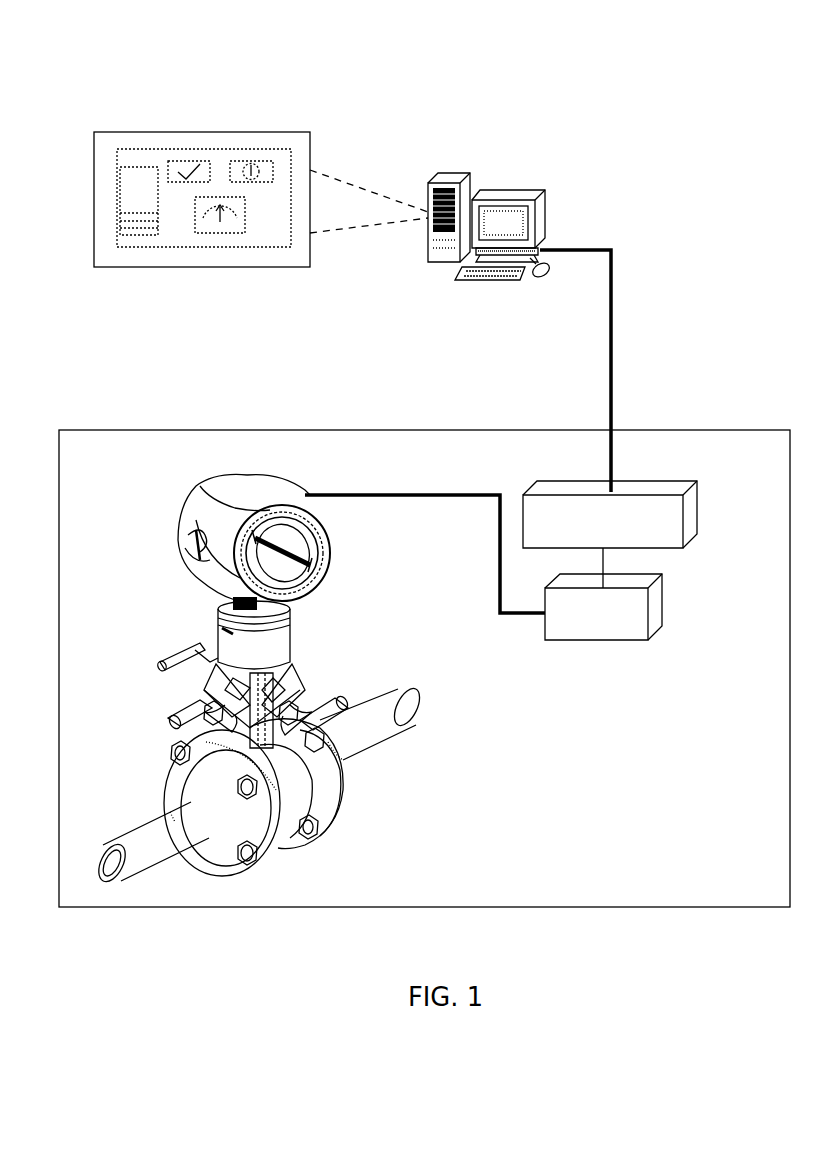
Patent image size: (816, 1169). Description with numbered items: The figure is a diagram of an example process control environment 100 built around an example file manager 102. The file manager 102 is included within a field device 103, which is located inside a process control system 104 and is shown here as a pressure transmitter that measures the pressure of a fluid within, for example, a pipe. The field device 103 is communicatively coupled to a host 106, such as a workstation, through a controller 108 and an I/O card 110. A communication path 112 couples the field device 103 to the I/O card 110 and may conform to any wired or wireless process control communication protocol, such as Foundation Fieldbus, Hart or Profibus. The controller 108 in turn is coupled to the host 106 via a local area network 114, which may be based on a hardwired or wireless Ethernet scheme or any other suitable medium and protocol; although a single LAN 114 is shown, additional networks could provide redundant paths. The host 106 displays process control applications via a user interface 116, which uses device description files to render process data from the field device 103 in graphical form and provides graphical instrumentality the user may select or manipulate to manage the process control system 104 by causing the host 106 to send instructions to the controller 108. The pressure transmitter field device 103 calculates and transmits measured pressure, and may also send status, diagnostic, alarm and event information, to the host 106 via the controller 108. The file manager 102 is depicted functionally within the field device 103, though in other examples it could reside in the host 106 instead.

The process control environment 100 is at (675, 62).
The file manager 102 is at (207, 564).
The field device 103 is at (258, 671).
The process control system 104 is at (135, 430).
The host 106 is at (548, 192).
The controller 108 is at (698, 504).
The I/O card 110 is at (660, 604).
The communication path 112 is at (418, 495).
The local area network (LAN) 114 is at (612, 383).
The user interface 116 is at (310, 133).